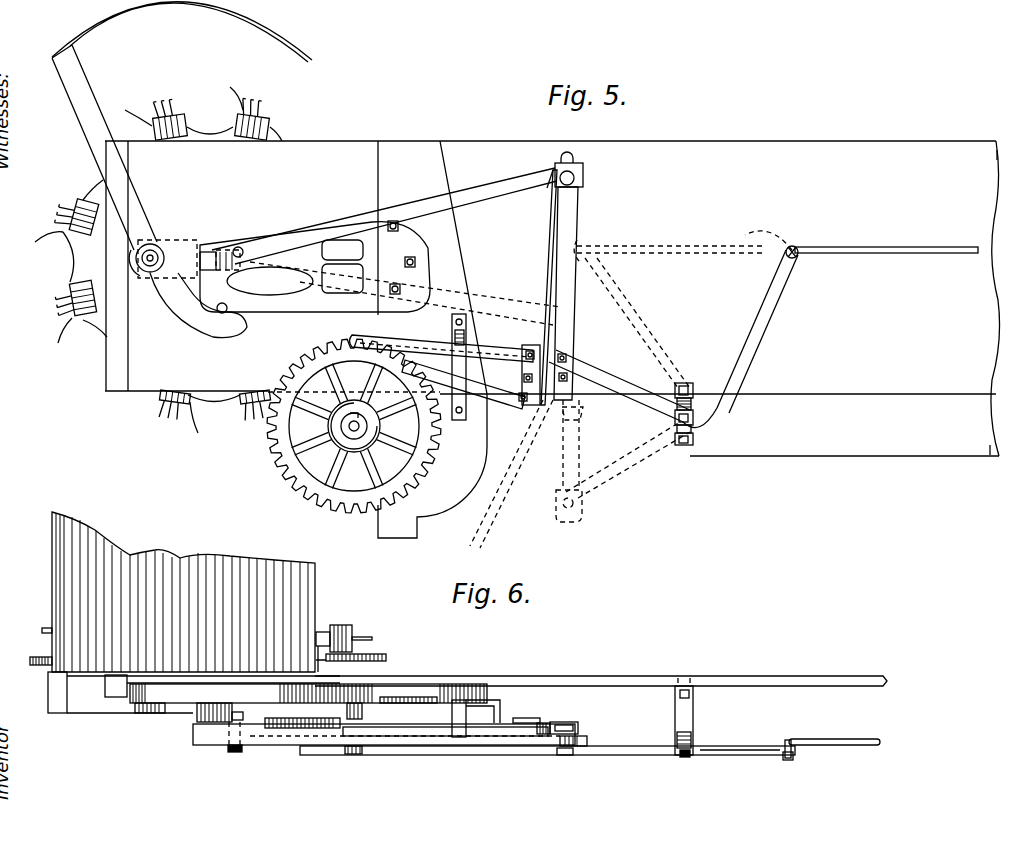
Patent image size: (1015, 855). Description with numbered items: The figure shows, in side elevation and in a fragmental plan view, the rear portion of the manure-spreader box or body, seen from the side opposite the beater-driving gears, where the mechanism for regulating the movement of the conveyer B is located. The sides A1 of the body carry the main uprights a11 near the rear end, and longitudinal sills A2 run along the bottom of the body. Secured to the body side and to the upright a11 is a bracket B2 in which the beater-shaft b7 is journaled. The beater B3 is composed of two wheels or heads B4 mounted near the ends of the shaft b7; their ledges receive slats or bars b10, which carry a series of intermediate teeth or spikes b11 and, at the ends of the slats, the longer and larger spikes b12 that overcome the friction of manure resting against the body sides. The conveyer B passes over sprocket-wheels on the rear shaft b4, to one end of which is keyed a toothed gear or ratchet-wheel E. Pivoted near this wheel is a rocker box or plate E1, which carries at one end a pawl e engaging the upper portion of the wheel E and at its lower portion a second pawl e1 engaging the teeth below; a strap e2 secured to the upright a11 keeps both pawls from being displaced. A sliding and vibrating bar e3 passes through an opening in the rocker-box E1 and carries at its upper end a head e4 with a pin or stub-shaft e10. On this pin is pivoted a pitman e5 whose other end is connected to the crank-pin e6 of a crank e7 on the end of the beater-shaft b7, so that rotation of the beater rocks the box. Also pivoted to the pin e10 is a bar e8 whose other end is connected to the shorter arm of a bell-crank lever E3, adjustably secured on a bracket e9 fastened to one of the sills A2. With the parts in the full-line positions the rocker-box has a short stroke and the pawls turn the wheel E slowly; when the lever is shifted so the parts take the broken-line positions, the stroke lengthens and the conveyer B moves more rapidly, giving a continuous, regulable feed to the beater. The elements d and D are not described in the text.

In FIG. 5, the sides of the box or body A1 is at (889, 170).
In FIG. 6, the sides of the box or body A1 is at (640, 677).
In FIG. 5, the sills A2 is at (950, 431).
In FIG. 5, the main uprights a11 is at (432, 466).
In FIG. 6, the main uprights a11 is at (420, 697).
In FIG. 5, the arm d is at (124, 161).
In FIG. 6, the arm d is at (88, 713).
In FIG. 5, the segment / bellows D is at (180, 36).
In FIG. 6, the segment / bellows D is at (180, 628).
In FIG. 5, the end spikes b12 is at (153, 118).
In FIG. 5, the intermediate teeth or spikes b11 is at (175, 108).
In FIG. 5, the wheels or heads of the beater B4 is at (200, 123).
In FIG. 5, the beater B3 is at (267, 127).
In FIG. 6, the beater B3 is at (345, 630).
In FIG. 5, the slats or bars b10 is at (82, 200).
In FIG. 5, the conveyer B is at (268, 441).
In FIG. 5, the bracket B2 is at (232, 245).
In FIG. 6, the bracket B2 is at (370, 685).
In FIG. 5, the crank e7 is at (205, 250).
In FIG. 6, the crank e7 is at (243, 717).
In FIG. 5, the beater-shaft b7 is at (240, 250).
In FIG. 6, the beater-shaft b7 is at (197, 720).
In FIG. 5, the crank-pin e6 is at (243, 252).
In FIG. 6, the crank-pin e6 is at (233, 749).
In FIG. 5, the pitman e5 is at (490, 197).
In FIG. 6, the pitman e5 is at (258, 741).
In FIG. 5, the head e4 is at (577, 157).
In FIG. 6, the head e4 is at (578, 728).
In FIG. 5, the pin or stub-shaft e10 is at (580, 186).
In FIG. 6, the pin or stub-shaft e10 is at (558, 751).
In FIG. 5, the bar e8 is at (570, 237).
In FIG. 6, the bar e8 is at (587, 745).
In FIG. 5, the sliding and vibrating bar e3 is at (552, 264).
In FIG. 6, the sliding and vibrating bar e3 is at (552, 728).
In FIG. 5, the strap e2 is at (452, 322).
In FIG. 6, the strap e2 is at (467, 722).
In FIG. 5, the pawl e is at (495, 350).
In FIG. 6, the pawl e is at (407, 734).
In FIG. 5, the pawl e1 is at (513, 403).
In FIG. 5, the bell-crank lever E3 is at (742, 340).
In FIG. 6, the bell-crank lever E3 is at (738, 752).
In FIG. 5, the bracket e9 is at (687, 383).
In FIG. 6, the bracket e9 is at (693, 718).
In FIG. 5, the rocker box or plate E1 is at (812, 246).
In FIG. 6, the rocker box or plate E1 is at (528, 723).
In FIG. 5, the shaft b4 is at (355, 438).
In FIG. 6, the shaft b4 is at (352, 755).
In FIG. 6, the toothed gear or ratchet-wheel E is at (317, 728).